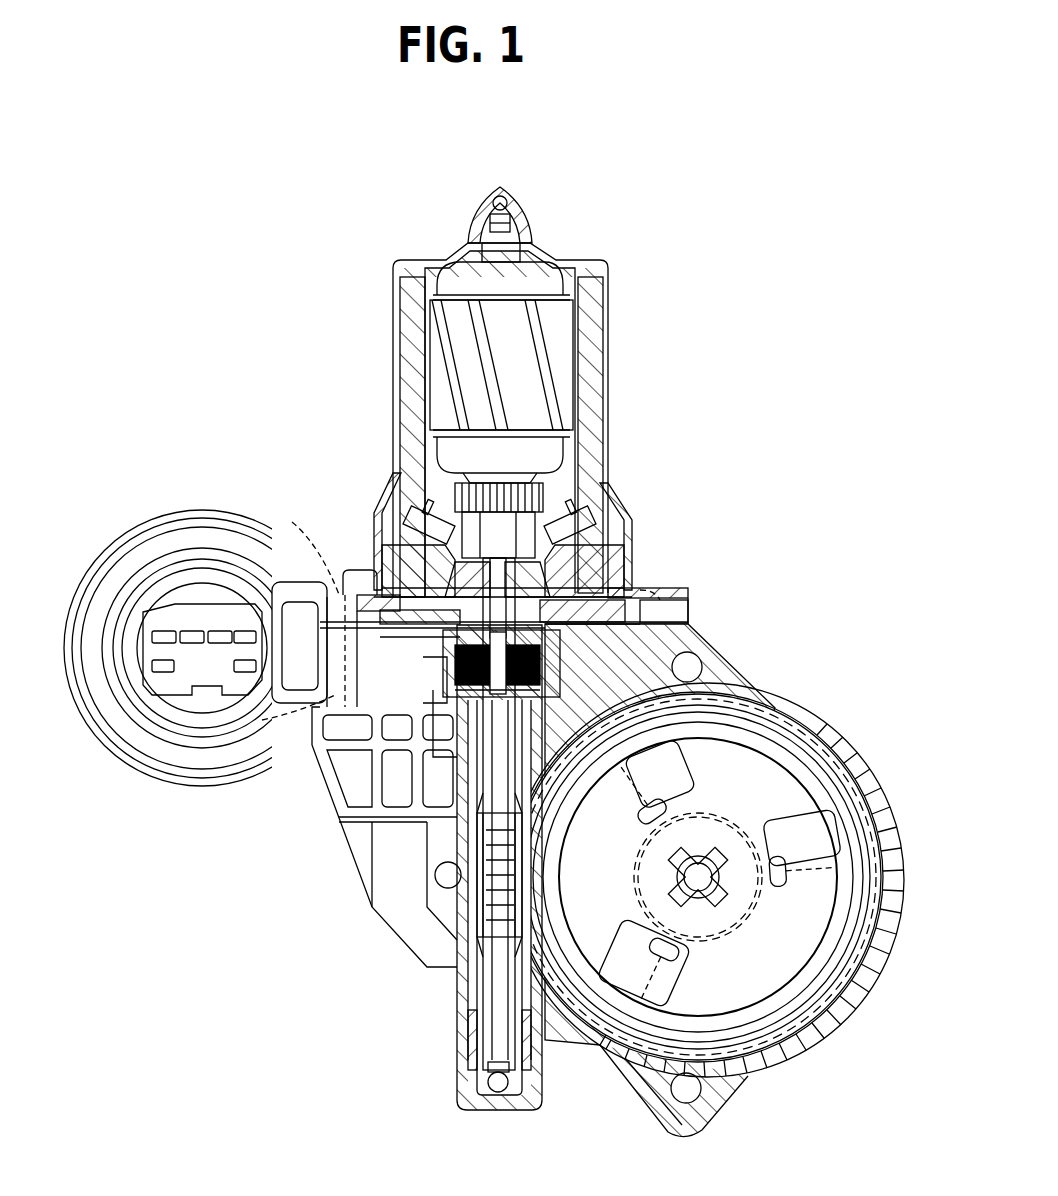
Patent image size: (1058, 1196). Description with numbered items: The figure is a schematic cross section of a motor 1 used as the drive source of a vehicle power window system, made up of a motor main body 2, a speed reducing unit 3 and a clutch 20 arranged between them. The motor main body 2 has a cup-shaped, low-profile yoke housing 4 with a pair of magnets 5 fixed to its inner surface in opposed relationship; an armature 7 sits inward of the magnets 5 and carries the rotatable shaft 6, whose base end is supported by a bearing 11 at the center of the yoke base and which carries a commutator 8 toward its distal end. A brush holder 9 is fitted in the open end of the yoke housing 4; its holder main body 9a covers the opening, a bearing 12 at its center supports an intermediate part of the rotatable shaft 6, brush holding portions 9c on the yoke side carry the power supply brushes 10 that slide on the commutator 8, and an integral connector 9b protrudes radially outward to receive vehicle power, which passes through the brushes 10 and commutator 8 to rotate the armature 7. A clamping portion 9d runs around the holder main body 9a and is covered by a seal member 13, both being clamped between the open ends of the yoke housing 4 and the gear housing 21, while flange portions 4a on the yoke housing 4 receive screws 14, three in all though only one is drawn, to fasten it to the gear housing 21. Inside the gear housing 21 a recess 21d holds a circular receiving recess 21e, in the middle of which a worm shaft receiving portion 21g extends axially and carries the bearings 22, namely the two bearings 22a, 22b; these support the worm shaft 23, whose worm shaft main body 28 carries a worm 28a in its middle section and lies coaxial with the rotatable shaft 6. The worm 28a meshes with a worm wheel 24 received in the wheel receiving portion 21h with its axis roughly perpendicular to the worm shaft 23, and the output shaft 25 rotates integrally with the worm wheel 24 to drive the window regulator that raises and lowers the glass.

The motor 1 is at (787, 455).
The motor main body 2 is at (692, 431).
The speed reducing unit 3 is at (758, 583).
The yoke housing 4 is at (612, 292).
The flange portions 4a is at (345, 575).
The magnets 5 is at (400, 325).
The rotatable shaft 6 is at (512, 580).
The armature 7 is at (565, 355).
The commutator 8 is at (493, 485).
The brush holder 9 is at (610, 525).
The holder main body 9a is at (410, 548).
The connector 9b is at (180, 535).
The brush holding portions 9c is at (395, 500).
The clamping portion 9d is at (633, 585).
The power supply brushes 10 is at (420, 512).
The bearing 11 is at (500, 225).
The bearing 12 is at (495, 515).
The seal member 13 is at (340, 612).
The screws 14 is at (360, 573).
The clutch 20 is at (548, 610).
The gear housing 21 is at (342, 836).
The recess 21d is at (580, 638).
The receiving recess 21e is at (447, 660).
The worm shaft receiving portion 21g is at (470, 840).
The wheel receiving portion 21h is at (795, 1048).
The worm shaft housing 22 is at (504, 867).
The bearing 22a is at (555, 678).
The bearing 22b is at (475, 1015).
The worm shaft 23 is at (460, 822).
The worm wheel 24 is at (822, 735).
The output shaft 25 is at (700, 905).
The worm shaft main body 28 is at (490, 985).
The worm 28a is at (480, 935).